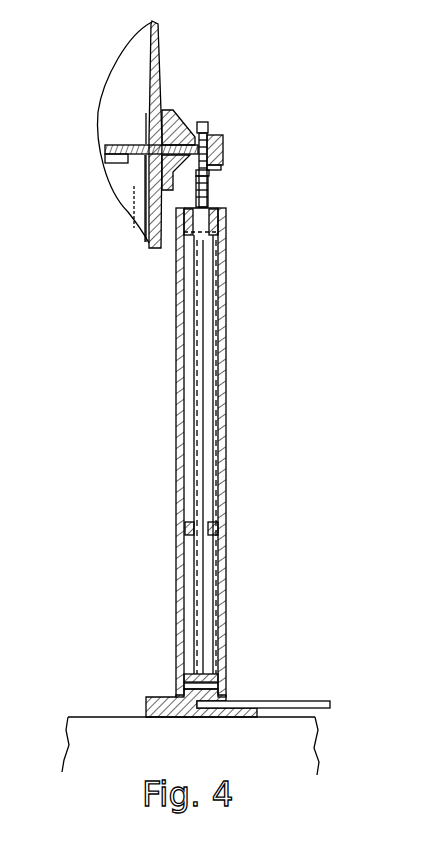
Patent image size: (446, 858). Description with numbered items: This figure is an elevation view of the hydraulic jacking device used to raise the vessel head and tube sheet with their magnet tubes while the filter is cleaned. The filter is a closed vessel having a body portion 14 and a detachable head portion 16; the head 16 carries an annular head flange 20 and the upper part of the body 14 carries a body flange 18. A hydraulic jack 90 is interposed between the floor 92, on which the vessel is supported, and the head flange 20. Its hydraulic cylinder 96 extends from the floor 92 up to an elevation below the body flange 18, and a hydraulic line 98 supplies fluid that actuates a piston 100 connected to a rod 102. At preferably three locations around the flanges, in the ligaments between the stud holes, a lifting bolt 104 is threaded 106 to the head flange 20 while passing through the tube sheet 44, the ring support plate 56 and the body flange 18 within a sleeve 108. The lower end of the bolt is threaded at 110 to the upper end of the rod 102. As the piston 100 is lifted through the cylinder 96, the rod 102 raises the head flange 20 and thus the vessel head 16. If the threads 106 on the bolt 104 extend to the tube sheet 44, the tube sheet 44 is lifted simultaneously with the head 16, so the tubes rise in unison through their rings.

The body portion 14 is at (141, 220).
The detachable head portion 16 is at (162, 74).
The body flange 18 is at (210, 176).
The head flange 20 is at (188, 128).
The tube sheet 44 is at (123, 147).
The ring support plate 56 is at (143, 166).
The hydraulic jack 90 is at (236, 356).
The floor 92 is at (108, 717).
The hydraulic cylinder 96 is at (213, 654).
The hydraulic line 98 is at (283, 700).
The piston 100 is at (212, 668).
The rod 102 is at (203, 475).
The lifting bolt 104 is at (208, 126).
The threads 106 is at (225, 138).
The sleeve 108 is at (222, 167).
The threads 110 is at (209, 197).